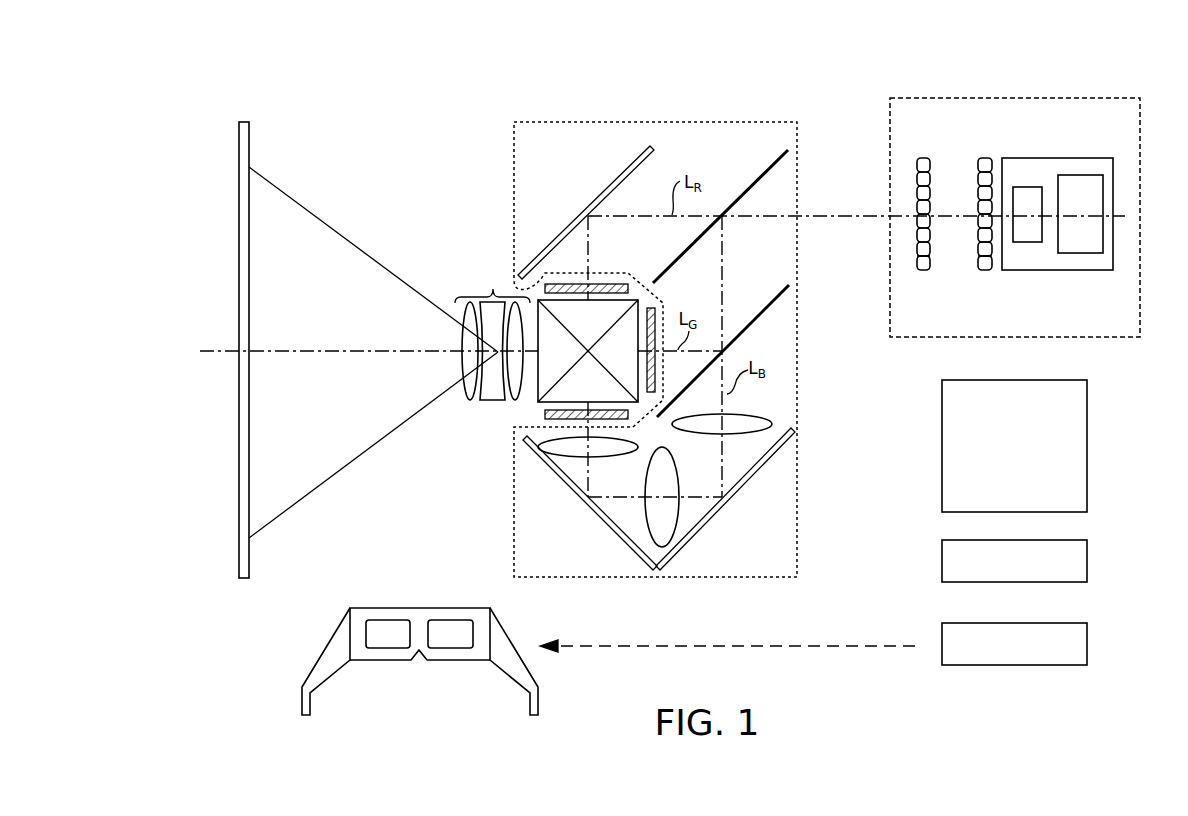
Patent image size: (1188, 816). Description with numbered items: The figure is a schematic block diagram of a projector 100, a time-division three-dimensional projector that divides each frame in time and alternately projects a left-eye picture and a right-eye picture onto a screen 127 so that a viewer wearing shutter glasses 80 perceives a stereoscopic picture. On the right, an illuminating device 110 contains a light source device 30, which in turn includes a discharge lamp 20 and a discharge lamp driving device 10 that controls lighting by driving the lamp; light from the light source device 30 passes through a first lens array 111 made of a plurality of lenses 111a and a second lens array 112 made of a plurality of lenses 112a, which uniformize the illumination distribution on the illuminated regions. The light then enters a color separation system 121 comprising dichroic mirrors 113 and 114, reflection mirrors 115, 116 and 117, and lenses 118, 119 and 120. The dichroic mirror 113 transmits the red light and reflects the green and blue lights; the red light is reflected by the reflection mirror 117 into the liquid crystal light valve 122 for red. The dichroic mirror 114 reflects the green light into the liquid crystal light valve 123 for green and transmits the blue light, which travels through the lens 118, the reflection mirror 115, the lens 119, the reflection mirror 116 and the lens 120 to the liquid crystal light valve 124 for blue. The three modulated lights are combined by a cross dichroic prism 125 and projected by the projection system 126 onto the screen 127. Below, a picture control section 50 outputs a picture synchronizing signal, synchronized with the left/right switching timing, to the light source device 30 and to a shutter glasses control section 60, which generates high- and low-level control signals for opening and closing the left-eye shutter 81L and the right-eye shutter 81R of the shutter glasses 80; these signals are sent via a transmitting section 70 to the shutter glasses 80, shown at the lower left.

The projector 100 is at (758, 70).
The illuminating device 110 is at (1063, 98).
The first lens array 111 is at (986, 150).
The lenses 111a is at (984, 270).
The second lens array 112 is at (923, 150).
The lenses 112a is at (924, 270).
The light source device 30 is at (1075, 158).
The discharge lamp 20 is at (1025, 243).
The discharge lamp driving device 10 is at (1080, 253).
The dichroic mirror 113 is at (764, 172).
The dichroic mirror 114 is at (767, 304).
The reflection mirror 115 is at (780, 460).
The reflection mirror 116 is at (600, 518).
The reflection mirror 117 is at (617, 181).
The lens 118 is at (770, 424).
The lens 119 is at (672, 512).
The lens 120 is at (566, 452).
The color separation system 121 is at (542, 122).
The liquid crystal light valve 122 is at (608, 283).
The liquid crystal light valve 123 is at (663, 313).
The liquid crystal light valve 124 is at (544, 420).
The cross dichroic prism 125 is at (537, 403).
The projection system 126 is at (493, 287).
The screen 127 is at (238, 490).
The picture control section 50 is at (1088, 446).
The shutter glasses control section 60 is at (1088, 561).
The transmitting section 70 is at (1088, 646).
The shutter glasses 80 is at (373, 612).
The left-eye shutter 81L is at (388, 640).
The right-eye shutter 81R is at (455, 640).